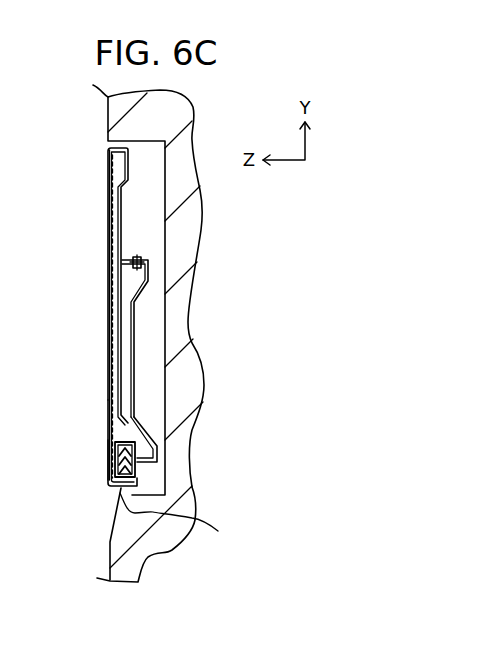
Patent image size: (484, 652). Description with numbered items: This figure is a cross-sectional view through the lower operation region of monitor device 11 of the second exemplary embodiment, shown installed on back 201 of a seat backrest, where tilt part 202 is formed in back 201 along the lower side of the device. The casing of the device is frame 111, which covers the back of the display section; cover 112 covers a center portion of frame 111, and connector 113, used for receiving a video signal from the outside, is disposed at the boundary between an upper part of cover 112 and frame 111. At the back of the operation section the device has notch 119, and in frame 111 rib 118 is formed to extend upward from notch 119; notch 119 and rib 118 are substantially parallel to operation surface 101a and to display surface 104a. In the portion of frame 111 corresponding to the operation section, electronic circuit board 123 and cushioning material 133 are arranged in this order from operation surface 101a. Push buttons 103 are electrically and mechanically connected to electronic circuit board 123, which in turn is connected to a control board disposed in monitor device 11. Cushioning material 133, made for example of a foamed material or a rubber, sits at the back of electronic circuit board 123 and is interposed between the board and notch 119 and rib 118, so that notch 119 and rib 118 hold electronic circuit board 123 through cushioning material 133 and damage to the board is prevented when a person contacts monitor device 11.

The back of a backrest of a seat 201 is at (108, 113).
The tilt part 202 is at (115, 523).
The monitor device 11 is at (82, 167).
The display surface 104a is at (110, 252).
The operation surface 101a is at (108, 443).
The push buttons 103 is at (108, 460).
The cover 112 is at (135, 332).
The connector 113 is at (145, 259).
The frame 111 is at (158, 445).
The rib 118 is at (137, 445).
The notch 119 is at (145, 471).
The cushioning material 133 is at (187, 518).
The electronic circuit board 123 is at (124, 492).